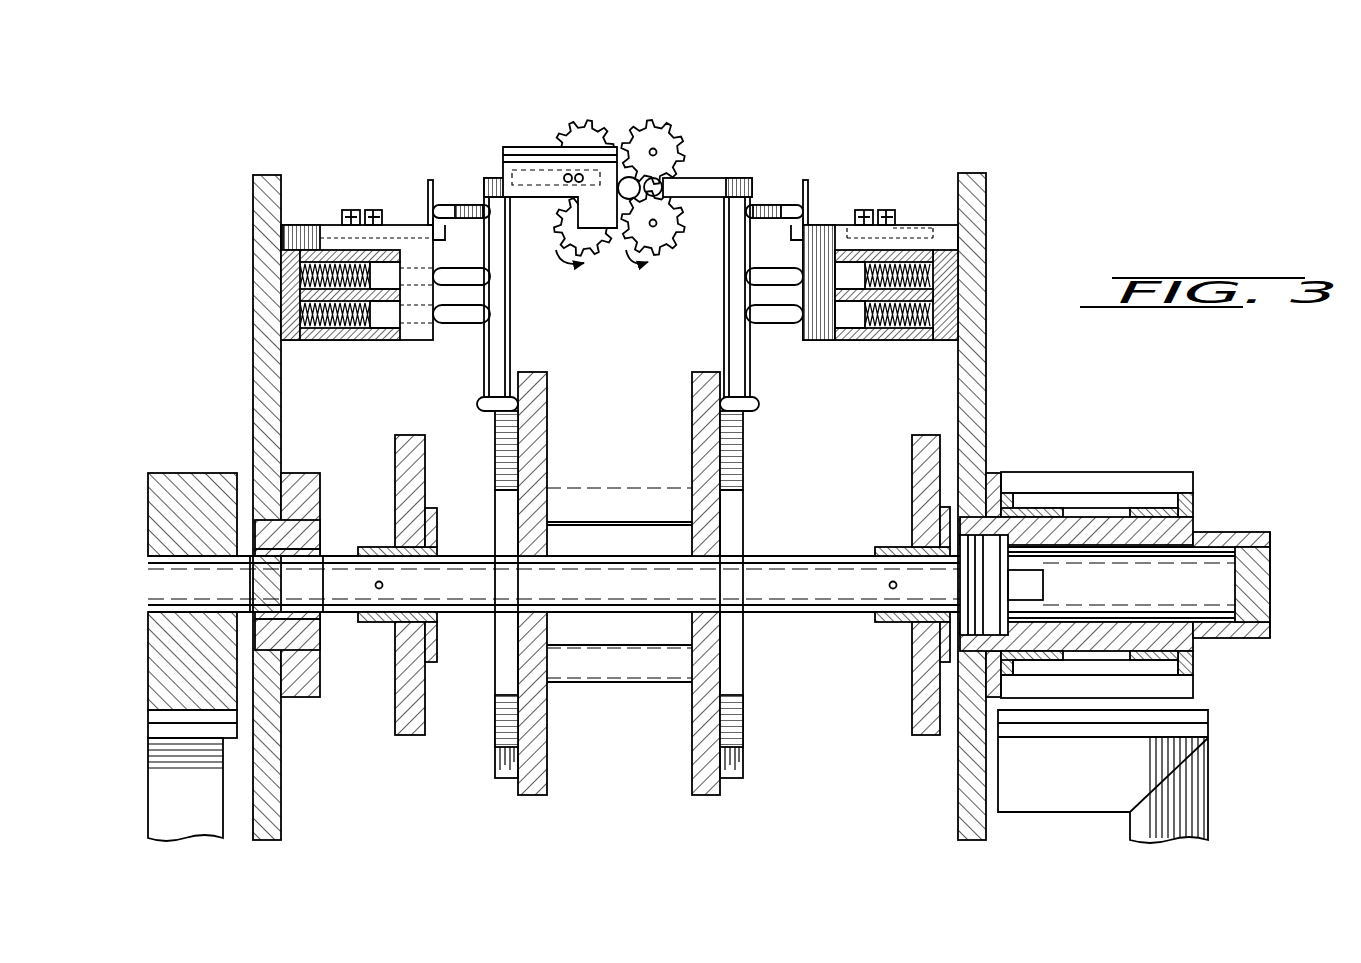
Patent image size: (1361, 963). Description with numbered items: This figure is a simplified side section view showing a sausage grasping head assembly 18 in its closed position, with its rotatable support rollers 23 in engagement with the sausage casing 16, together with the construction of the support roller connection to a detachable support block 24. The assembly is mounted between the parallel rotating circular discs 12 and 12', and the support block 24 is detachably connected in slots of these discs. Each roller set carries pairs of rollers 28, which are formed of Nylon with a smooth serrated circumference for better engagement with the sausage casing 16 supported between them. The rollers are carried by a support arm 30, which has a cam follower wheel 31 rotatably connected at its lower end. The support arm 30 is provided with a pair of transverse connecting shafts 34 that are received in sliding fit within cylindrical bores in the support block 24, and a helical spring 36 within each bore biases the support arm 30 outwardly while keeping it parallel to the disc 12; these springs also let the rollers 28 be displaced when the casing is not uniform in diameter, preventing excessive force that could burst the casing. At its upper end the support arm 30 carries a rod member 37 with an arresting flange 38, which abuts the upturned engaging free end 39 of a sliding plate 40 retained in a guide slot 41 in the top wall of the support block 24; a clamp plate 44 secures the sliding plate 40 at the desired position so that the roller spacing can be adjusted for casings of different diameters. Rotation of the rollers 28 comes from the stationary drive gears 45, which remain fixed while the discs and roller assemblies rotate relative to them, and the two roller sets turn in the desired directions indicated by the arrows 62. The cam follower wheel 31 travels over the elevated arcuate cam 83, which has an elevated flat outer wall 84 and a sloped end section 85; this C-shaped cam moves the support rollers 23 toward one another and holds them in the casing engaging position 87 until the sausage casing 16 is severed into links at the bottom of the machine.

The rotating circular disc 12 is at (1011, 506).
The circular disc 12' is at (229, 507).
The sausage casing 16 is at (641, 194).
The sausage grasping head assembly 18 is at (606, 112).
The rotatable support roller 23 is at (630, 92).
The detachable support block 24 is at (320, 236).
The roller 28 is at (583, 132).
The support arm 30 is at (505, 308).
The cam follower wheel 31 is at (758, 404).
The transverse connecting shaft 34 is at (461, 321).
The helical spring 36 is at (900, 334).
The rod member 37 is at (782, 208).
The arresting flange 38 is at (808, 188).
The upturned engaging free end 39 is at (797, 224).
The sliding plate 40 is at (848, 227).
The guide slot 41 is at (928, 238).
The clamp plate 44 is at (894, 224).
The stationary drive gear 45 is at (402, 470).
The arrow 62 is at (559, 121).
The arcuate cam 83 is at (507, 460).
The elevated flat outer wall 84 is at (495, 530).
The sloped end section 85 is at (493, 417).
The casing engaging position 87 is at (626, 121).